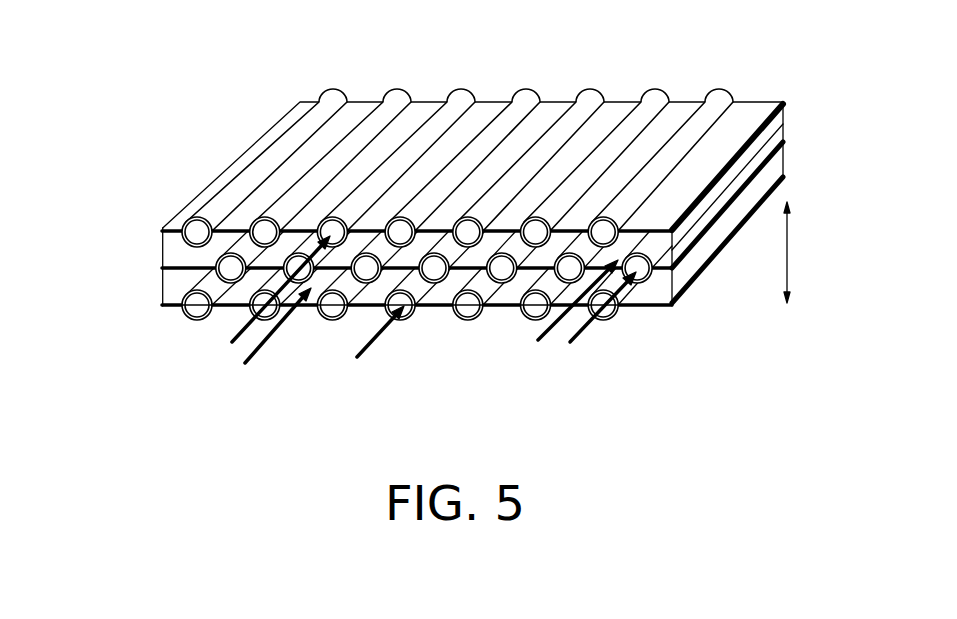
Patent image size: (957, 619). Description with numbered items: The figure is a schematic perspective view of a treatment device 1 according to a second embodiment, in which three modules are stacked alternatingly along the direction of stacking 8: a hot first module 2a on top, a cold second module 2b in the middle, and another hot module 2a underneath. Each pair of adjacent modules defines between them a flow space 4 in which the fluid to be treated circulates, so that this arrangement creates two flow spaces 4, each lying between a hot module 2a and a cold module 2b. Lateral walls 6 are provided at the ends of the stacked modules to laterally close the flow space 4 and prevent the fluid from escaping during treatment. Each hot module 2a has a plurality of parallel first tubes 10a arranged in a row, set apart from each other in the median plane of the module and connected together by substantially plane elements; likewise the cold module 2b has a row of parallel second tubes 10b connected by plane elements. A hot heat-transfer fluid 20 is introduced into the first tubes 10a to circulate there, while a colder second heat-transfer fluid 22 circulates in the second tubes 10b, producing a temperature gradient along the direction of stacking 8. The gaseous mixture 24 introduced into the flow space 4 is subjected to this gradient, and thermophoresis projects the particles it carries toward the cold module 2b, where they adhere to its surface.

The treatment device 1 is at (207, 148).
The first module 2a is at (160, 228).
The second module 2b is at (765, 160).
The flow space 4 is at (653, 288).
The lateral walls 6 is at (161, 258).
The direction of stacking 8 is at (787, 250).
The first tubes 10a is at (591, 102).
The second tubes 10b is at (498, 265).
The first hot heat-transfer fluid 20 is at (228, 335).
The second heat-transfer fluid 22 is at (583, 333).
The gaseous mixture 24 is at (242, 365).